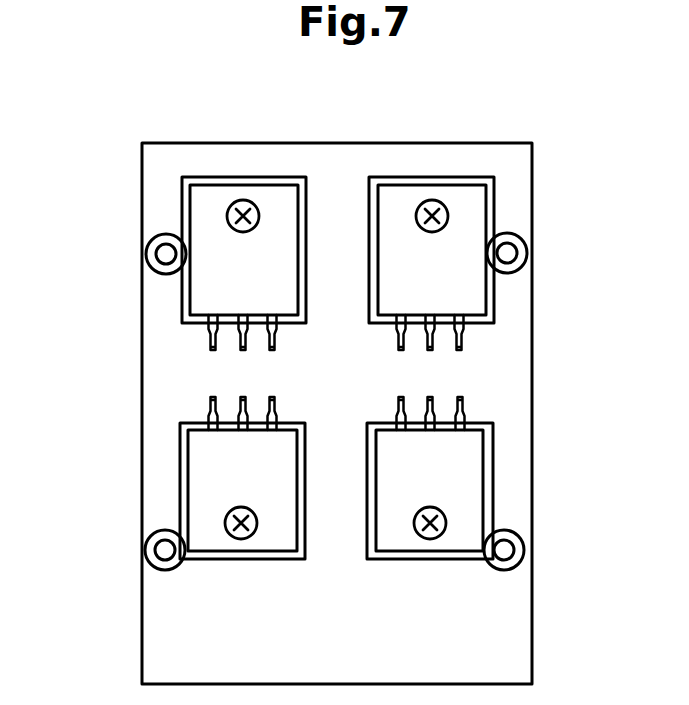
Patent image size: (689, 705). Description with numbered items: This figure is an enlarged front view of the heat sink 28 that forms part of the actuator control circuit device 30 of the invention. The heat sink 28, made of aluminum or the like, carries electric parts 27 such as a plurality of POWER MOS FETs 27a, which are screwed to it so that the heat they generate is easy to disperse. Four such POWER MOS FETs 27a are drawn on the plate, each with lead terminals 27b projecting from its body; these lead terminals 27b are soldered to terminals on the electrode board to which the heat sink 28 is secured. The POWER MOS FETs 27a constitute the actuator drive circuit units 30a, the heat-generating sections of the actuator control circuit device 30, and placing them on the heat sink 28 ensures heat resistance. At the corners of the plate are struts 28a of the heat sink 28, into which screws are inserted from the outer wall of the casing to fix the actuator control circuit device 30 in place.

The electric parts 27 is at (407, 323).
The POWER MOS FET 27a is at (283, 297).
The lead terminals 27b is at (400, 351).
The heat sink 28 is at (533, 197).
The struts 28a is at (160, 550).
The actuator control circuit device 30 is at (187, 295).
The actuator drive circuit units 30a is at (472, 282).